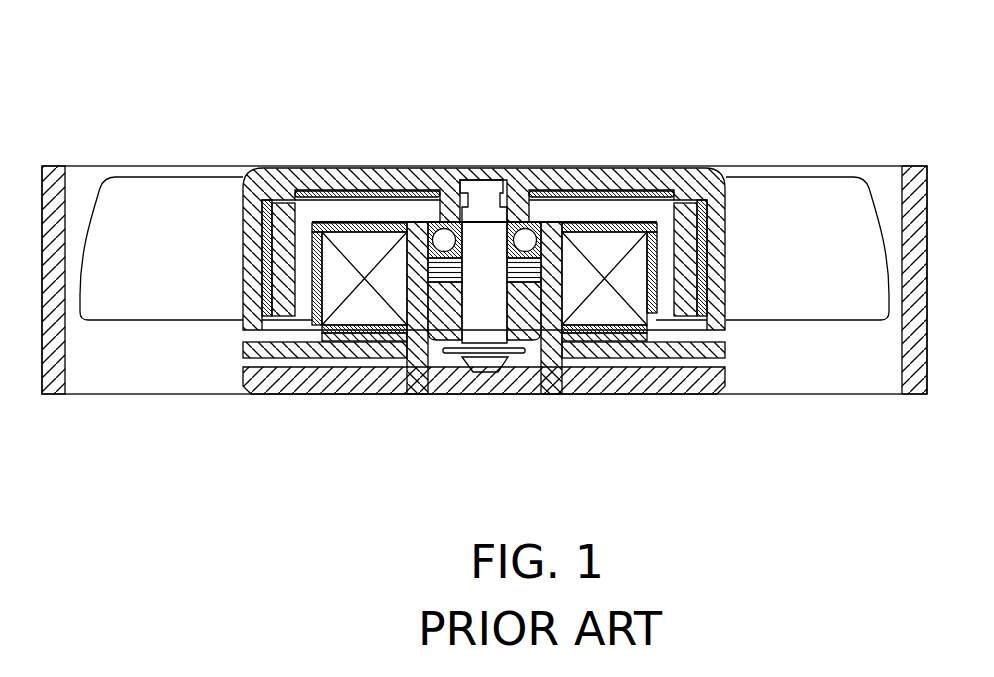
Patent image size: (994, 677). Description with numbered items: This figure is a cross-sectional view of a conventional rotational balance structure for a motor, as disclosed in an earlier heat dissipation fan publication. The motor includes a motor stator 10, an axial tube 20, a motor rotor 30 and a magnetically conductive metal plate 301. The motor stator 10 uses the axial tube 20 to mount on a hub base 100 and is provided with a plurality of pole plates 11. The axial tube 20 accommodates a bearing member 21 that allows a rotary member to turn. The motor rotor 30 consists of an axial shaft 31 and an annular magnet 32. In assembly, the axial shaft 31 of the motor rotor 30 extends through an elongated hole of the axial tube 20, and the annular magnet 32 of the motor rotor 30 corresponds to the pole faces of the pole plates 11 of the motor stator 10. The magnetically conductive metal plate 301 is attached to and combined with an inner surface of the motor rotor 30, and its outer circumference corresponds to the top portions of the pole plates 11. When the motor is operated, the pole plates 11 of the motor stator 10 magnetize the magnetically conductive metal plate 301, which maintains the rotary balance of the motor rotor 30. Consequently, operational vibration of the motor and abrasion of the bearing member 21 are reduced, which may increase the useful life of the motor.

The hub base 100 is at (677, 382).
The motor rotor 30 is at (572, 166).
The magnetically conductive metal plate 301 is at (340, 185).
The annular magnet 32 is at (287, 243).
The axial shaft 31 is at (483, 230).
The pole plates 11 is at (630, 223).
The motor stator 10 is at (315, 320).
The axial tube 20 is at (420, 363).
The bearing member 21 is at (445, 317).